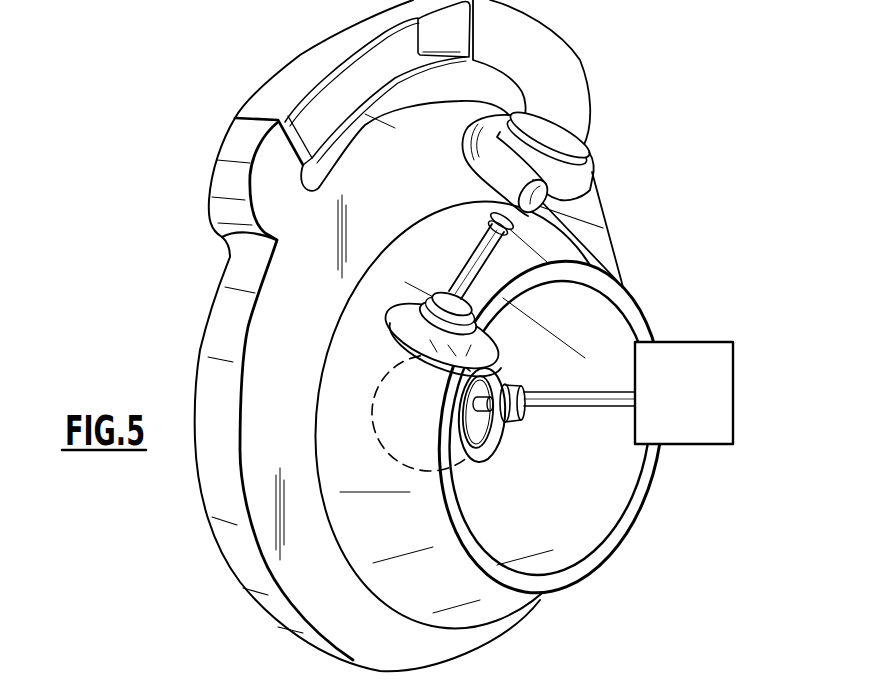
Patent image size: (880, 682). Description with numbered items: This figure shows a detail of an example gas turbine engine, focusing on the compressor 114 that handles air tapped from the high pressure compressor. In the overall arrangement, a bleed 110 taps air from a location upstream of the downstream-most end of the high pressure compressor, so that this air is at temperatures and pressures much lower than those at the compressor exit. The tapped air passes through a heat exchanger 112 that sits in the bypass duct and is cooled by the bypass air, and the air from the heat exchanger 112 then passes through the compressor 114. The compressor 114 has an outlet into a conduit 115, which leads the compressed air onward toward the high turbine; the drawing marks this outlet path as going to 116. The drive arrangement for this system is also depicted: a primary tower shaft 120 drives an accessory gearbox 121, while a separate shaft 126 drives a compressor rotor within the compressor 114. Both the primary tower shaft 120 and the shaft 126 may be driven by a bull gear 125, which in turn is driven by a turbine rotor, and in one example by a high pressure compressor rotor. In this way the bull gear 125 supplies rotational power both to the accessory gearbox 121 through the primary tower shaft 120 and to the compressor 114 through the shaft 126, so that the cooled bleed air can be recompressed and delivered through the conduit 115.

The bleed 110 is at (215, 236).
The heat exchanger 112 is at (328, 47).
The compressor 114 is at (622, 165).
The conduit 115 is at (473, 175).
The external unit (to 116) 116 is at (603, 228).
The primary tower shaft 120 is at (540, 404).
The accessory gearbox 121 is at (708, 365).
The bull gear 125 is at (398, 452).
The shaft 126 is at (482, 264).